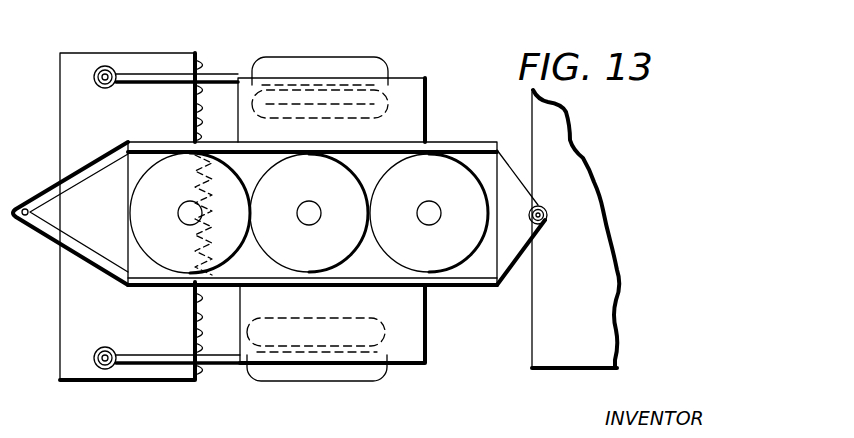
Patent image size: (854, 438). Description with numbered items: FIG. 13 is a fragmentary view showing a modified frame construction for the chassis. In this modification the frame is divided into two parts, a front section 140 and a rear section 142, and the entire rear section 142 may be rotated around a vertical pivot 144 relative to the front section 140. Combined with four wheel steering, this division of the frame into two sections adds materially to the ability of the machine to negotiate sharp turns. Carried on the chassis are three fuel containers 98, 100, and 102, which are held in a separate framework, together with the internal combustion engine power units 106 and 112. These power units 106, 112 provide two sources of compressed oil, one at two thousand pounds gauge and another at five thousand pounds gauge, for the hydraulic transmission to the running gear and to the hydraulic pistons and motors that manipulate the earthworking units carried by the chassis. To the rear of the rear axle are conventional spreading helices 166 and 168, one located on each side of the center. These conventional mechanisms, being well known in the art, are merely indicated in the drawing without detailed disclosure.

The fuel container 98 is at (168, 183).
The fuel container 100 is at (292, 183).
The fuel container 102 is at (507, 120).
The internal combustion engine power unit 106 is at (407, 97).
The internal combustion engine power unit 112 is at (427, 365).
The rear section 142 is at (318, 48).
The front section 140 is at (543, 310).
The vertical pivot 144 is at (541, 226).
The spreading helix 166 is at (207, 317).
The spreading helix 168 is at (205, 110).